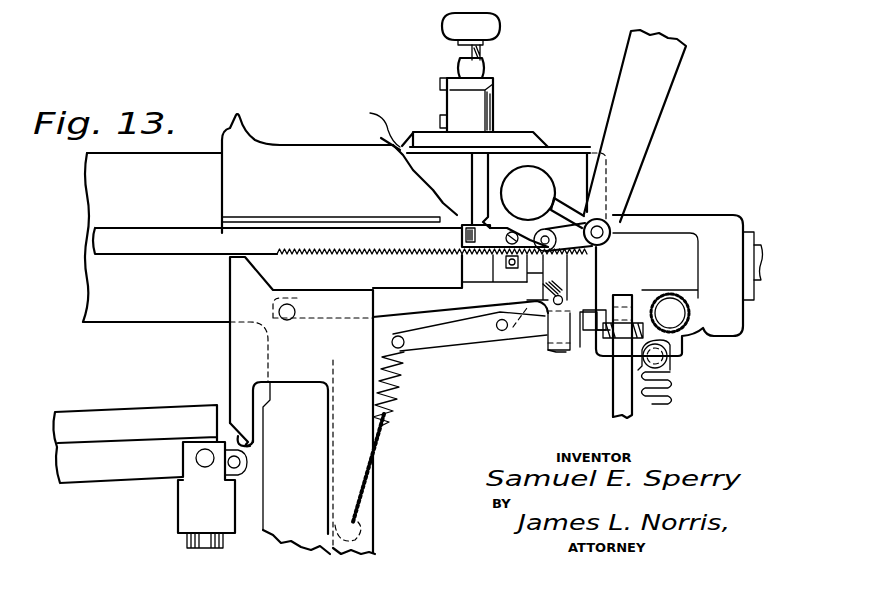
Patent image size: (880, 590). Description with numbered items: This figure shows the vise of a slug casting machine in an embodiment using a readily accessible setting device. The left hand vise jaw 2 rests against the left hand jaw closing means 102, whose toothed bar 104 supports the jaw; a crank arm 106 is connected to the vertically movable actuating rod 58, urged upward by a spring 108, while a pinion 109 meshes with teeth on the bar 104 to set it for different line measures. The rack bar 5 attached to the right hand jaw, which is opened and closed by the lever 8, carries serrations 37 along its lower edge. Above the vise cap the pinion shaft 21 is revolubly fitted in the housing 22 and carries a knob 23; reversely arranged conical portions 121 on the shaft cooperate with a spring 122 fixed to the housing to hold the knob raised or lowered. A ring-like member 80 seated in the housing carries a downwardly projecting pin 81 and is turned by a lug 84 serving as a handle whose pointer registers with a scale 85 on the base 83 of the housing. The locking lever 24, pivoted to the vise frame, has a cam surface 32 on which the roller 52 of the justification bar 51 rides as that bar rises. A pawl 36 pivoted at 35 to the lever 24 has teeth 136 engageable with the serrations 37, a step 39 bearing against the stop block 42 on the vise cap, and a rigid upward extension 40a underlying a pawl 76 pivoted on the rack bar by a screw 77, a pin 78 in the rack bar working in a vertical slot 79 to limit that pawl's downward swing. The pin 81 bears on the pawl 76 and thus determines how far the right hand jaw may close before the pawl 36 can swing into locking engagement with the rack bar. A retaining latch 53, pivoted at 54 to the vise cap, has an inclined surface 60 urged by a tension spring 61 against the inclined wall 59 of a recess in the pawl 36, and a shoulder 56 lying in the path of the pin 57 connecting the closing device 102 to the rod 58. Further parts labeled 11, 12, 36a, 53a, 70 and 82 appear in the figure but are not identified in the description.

The left hand vise jaw 2 is at (298, 156).
The rack bar 5 is at (340, 244).
The lever 8 is at (658, 107).
The link 11 is at (568, 202).
The pivot pin 12 is at (556, 240).
The pinion shaft 21 is at (486, 59).
The housing 22 is at (496, 102).
The knob 23 is at (443, 22).
The lever 24 is at (378, 502).
The cam surface 32 is at (256, 443).
The pivot 35 is at (287, 320).
The pawl 36 is at (346, 404).
The lug 36a is at (564, 356).
The teeth or serrations 37 is at (388, 254).
The step 39 is at (537, 278).
The rigid upward extension 40a is at (470, 262).
The stop block 42 is at (506, 270).
The justification bar 51 is at (128, 416).
The roller 52 is at (249, 462).
The retaining latch 53 is at (460, 342).
The lever arm 53a is at (540, 342).
The pivot 54 is at (500, 331).
The shoulder 56 is at (581, 342).
The pin 57 is at (592, 312).
The actuating rod 58 is at (612, 401).
The inclined upper wall 59 is at (510, 336).
The inclined surface 60 is at (552, 326).
The tension spring 61 is at (398, 400).
The screw 70 is at (186, 540).
The pawl 76 is at (498, 240).
The pivot pin or screw 77 is at (526, 240).
The pin 78 is at (468, 227).
The vertical slot 79 is at (462, 242).
The ring-like member 80 is at (530, 145).
The pin 81 is at (473, 166).
The base plate 82 is at (545, 149).
The base 83 is at (517, 134).
The lug 84 is at (370, 113).
The scale 85 is at (408, 134).
The left hand jaw closing means 102 is at (668, 230).
The toothed bar 104 is at (763, 242).
The crank arm 106 is at (609, 345).
The spring 108 is at (678, 386).
The pinion 109 is at (686, 322).
The conical portions 121 is at (458, 66).
The spring 122 is at (446, 86).
The teeth 136 is at (552, 282).